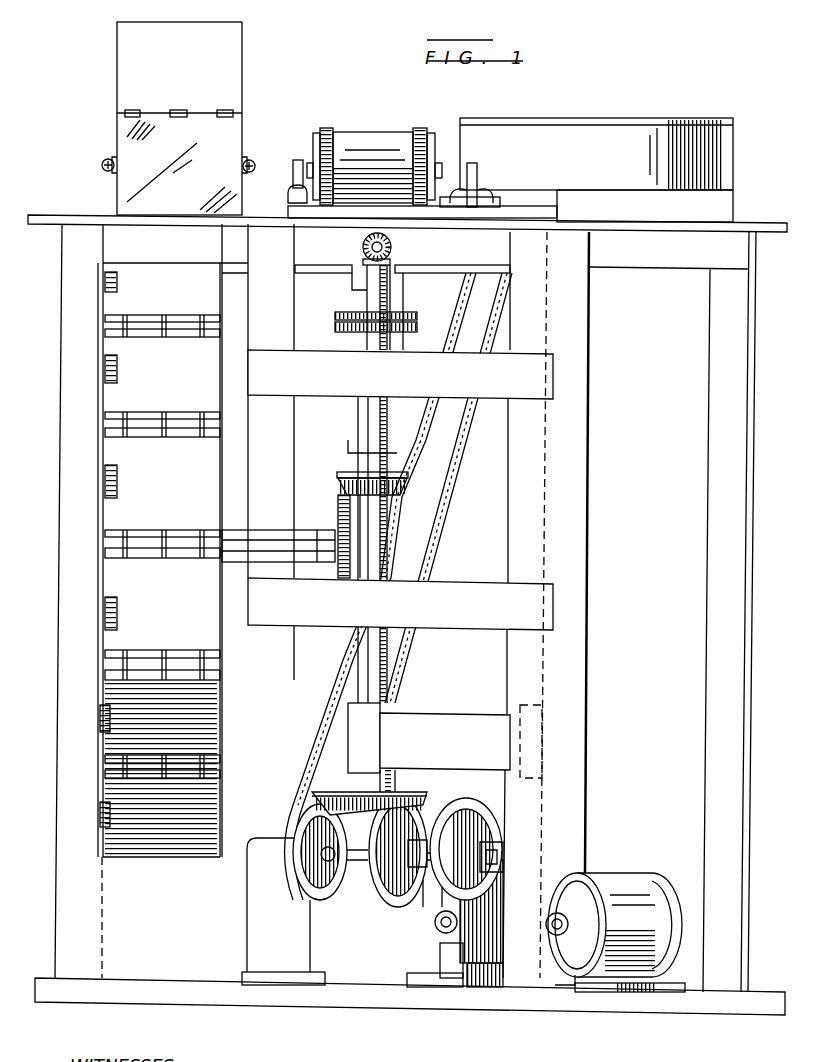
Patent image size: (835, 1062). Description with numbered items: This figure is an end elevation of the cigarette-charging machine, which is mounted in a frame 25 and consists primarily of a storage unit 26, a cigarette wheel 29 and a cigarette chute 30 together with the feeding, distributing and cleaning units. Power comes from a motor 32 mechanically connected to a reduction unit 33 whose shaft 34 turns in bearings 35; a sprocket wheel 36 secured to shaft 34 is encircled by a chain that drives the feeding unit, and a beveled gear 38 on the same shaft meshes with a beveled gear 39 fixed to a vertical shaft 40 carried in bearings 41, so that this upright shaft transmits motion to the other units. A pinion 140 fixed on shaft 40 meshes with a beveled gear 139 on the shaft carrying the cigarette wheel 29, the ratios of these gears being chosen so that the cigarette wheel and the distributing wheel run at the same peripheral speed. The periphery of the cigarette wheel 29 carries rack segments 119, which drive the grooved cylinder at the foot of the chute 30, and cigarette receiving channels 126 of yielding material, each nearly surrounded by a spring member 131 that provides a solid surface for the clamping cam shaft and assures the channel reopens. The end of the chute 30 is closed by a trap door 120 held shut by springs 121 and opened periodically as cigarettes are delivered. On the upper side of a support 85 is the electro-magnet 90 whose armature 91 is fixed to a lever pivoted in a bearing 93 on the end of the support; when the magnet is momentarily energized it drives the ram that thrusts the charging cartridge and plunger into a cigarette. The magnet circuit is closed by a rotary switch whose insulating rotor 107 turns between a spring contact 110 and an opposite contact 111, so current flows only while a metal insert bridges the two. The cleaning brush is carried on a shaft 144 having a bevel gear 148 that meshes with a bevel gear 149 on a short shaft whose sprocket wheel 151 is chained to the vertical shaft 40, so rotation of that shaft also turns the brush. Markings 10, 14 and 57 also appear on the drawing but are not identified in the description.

The section line 10- 10 is at (147, 68).
The section line 14- 14 is at (107, 215).
The frame 25 is at (725, 683).
The storage unit 26 is at (720, 114).
The cigarette wheel 29 is at (128, 298).
The cigarette chute 30 is at (227, 45).
The motor 32 is at (635, 940).
The reduction unit 33 is at (493, 937).
The shaft 34 is at (373, 860).
The bearings 35 is at (275, 968).
The sprocket wheel 36 is at (323, 897).
The beveled gear 38 is at (423, 820).
The beveled gear 39 is at (428, 798).
The vertical shaft 40 is at (375, 683).
The bearings 41 is at (495, 428).
The chain 57 is at (312, 770).
The support 85 is at (556, 212).
The electro-magnet 90 is at (370, 157).
The armature 91 is at (288, 160).
The bearing 93 is at (292, 210).
The rotor 107 is at (470, 177).
The spring contact 110 is at (453, 187).
The contact 111 is at (485, 198).
The rack segments 119 is at (100, 372).
The trap door 120 is at (240, 122).
The springs 121 is at (252, 162).
The cigarette receiving channel 126 is at (123, 425).
The spring member 131 is at (127, 437).
The beveled gear 139 is at (334, 578).
The pinion 140 is at (408, 492).
The shaft 144 is at (362, 250).
The bevel gear 148 is at (392, 247).
The bevel gear 149 is at (396, 258).
The sprocket wheel 151 is at (405, 313).